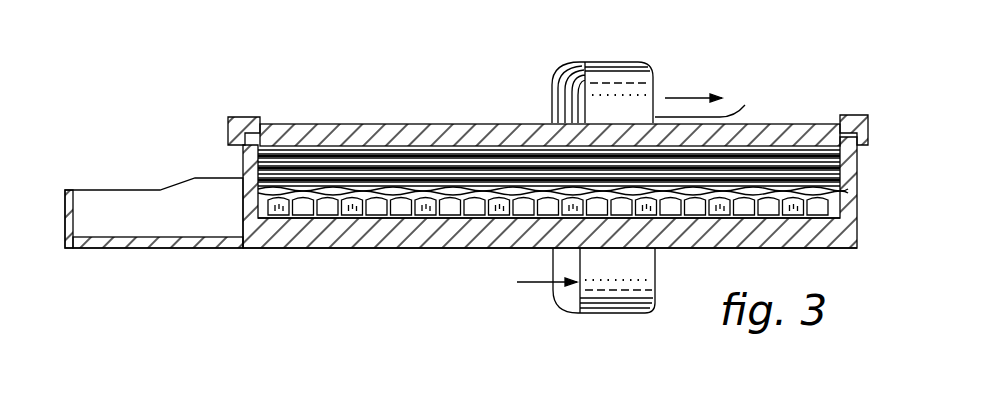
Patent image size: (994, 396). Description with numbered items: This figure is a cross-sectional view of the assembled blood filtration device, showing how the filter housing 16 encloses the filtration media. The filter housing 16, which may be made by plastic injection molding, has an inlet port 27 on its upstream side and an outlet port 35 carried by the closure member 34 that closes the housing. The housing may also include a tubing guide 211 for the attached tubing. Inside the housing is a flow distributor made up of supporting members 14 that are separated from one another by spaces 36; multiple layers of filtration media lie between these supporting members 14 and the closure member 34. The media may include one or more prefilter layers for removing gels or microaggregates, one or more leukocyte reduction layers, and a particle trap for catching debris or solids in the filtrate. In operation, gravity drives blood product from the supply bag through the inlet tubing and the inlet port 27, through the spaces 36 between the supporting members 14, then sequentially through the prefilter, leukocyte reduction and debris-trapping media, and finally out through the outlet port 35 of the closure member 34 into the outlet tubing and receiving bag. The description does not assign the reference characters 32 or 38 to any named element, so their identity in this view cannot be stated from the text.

The tubing guide 211 is at (135, 190).
The clamp 32 is at (255, 156).
The closure member 34 is at (375, 123).
The roller / direction arrow 38 is at (685, 92).
The outlet port 35 is at (745, 105).
The supporting members 14 is at (367, 248).
The filter housing 16 is at (763, 248).
The spaces 36 is at (682, 220).
The inlet port 27 is at (553, 290).